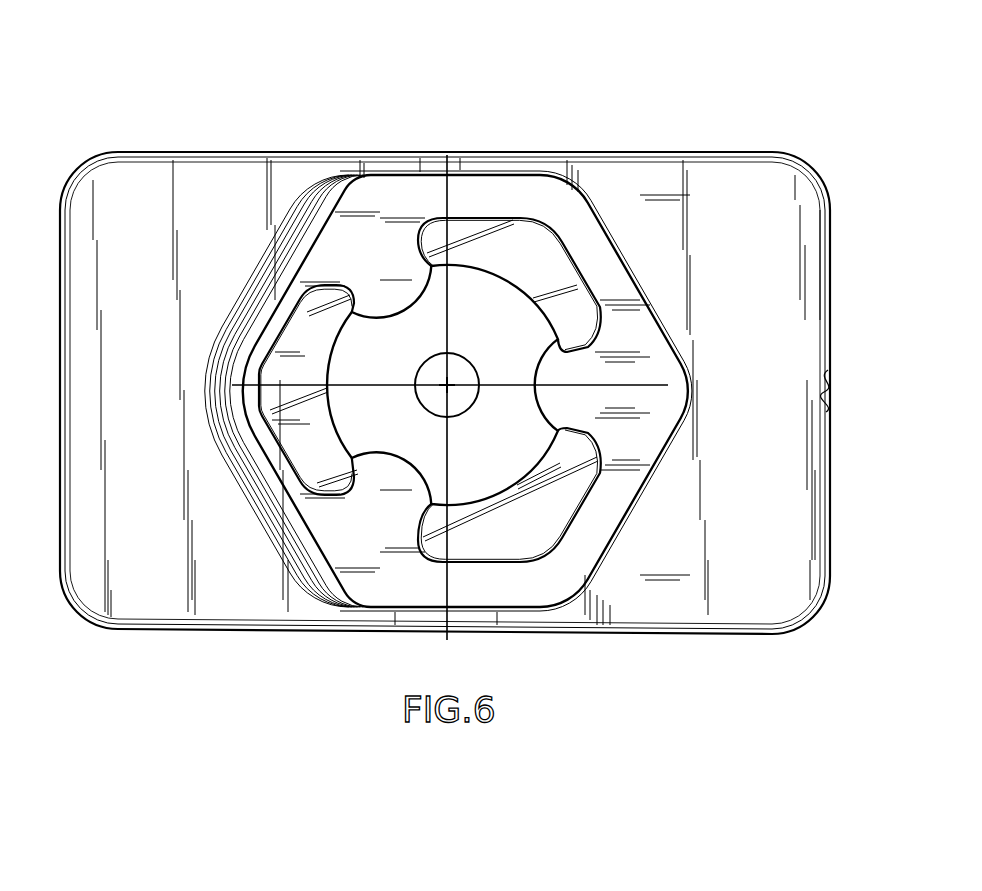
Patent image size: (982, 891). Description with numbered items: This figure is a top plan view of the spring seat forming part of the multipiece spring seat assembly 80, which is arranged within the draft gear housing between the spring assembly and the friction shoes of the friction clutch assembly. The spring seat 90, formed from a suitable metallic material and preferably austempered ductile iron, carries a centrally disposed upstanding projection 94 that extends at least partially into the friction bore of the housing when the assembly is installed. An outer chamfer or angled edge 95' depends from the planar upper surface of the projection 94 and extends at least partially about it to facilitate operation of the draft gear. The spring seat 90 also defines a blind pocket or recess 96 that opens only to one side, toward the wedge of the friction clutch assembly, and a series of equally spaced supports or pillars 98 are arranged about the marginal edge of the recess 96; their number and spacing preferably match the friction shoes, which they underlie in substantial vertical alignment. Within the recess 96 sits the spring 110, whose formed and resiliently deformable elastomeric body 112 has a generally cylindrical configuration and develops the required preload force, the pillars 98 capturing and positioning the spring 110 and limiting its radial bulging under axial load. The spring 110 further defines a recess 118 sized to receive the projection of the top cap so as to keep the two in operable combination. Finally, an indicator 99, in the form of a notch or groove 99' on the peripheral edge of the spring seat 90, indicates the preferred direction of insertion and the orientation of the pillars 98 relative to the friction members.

The multipiece spring seat assembly 80 is at (587, 134).
The spring seat 90 is at (248, 170).
The upstanding projection 94 is at (612, 502).
The outer chamfer or angled edge 95' is at (284, 391).
The blind pocket or recess 96 is at (560, 260).
The supports or pillars 98 is at (550, 363).
The indicator 99 is at (791, 397).
The notch or groove 99' is at (793, 429).
The spring 110 is at (318, 342).
The resiliently deformable body 112 is at (355, 430).
The recess 118 is at (433, 382).